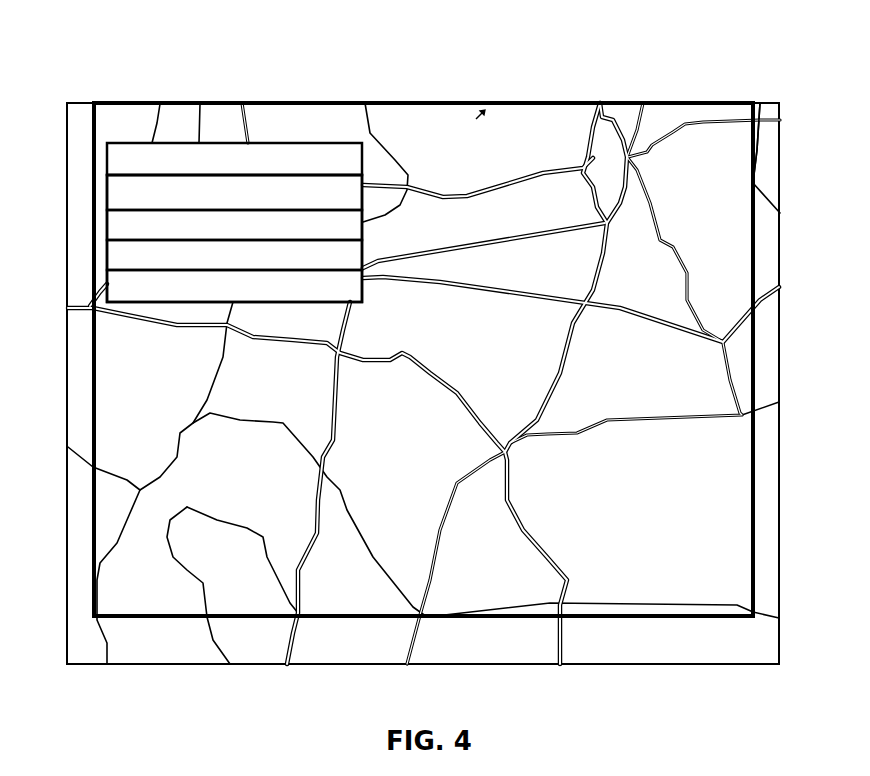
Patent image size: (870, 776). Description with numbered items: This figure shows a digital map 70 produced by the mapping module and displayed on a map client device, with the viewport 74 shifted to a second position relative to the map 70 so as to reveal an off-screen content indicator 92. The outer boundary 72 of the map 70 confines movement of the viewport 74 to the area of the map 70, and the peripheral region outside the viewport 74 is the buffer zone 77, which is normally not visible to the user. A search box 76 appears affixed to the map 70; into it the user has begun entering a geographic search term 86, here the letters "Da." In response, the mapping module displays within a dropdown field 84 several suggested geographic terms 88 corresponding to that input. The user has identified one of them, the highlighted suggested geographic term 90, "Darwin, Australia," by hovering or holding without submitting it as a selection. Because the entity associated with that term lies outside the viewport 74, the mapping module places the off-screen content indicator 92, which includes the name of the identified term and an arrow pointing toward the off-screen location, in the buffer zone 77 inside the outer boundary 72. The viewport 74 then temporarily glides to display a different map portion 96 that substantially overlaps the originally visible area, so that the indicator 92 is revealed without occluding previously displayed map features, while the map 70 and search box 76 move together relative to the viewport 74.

The digital map 70 is at (403, 40).
The outer boundary 72 is at (779, 347).
The viewport 74 is at (753, 243).
The search box 76 is at (201, 103).
The buffer zone 77 is at (770, 154).
The dropdown field 84 is at (224, 238).
The geographic search term 86 is at (107, 159).
The suggested geographic terms 88 is at (107, 194).
The highlighted suggested geographic term 90 is at (107, 255).
The off-screen content indicator 92 is at (548, 119).
The different map portion 96 is at (697, 113).